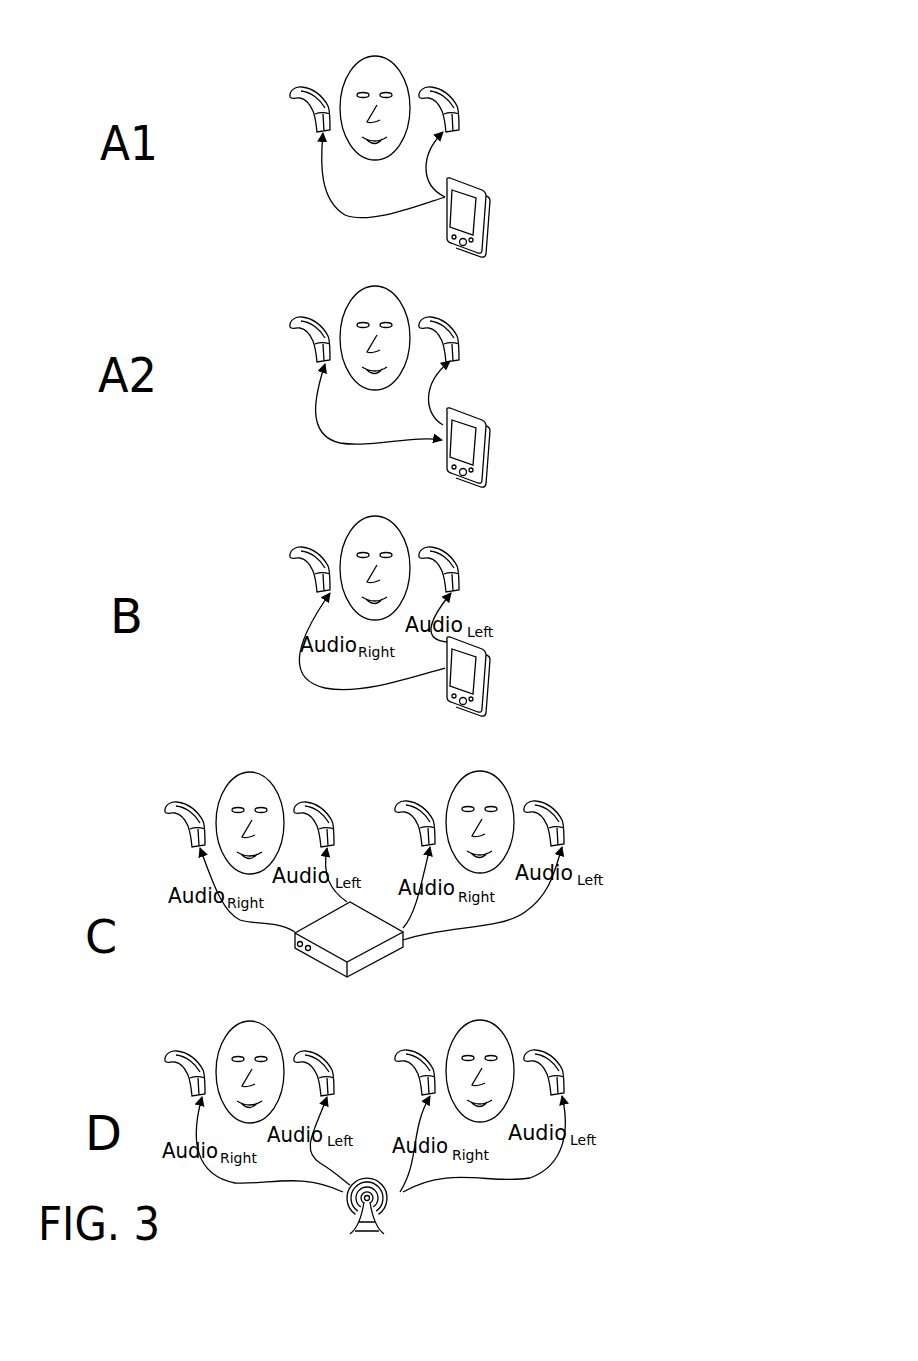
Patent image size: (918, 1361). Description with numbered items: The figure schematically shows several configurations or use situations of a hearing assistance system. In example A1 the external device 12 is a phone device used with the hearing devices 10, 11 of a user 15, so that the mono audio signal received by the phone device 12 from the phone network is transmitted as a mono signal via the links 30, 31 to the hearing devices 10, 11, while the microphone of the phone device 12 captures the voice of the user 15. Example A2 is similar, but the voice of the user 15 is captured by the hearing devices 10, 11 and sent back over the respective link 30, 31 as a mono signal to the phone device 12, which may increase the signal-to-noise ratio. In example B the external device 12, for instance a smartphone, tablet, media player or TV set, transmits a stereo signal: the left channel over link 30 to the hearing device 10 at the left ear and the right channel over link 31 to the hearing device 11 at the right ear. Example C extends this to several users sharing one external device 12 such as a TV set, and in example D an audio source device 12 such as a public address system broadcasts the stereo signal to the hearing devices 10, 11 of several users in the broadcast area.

The hearing device 10 is at (459, 113).
The hearing device 11 is at (308, 104).
The external device 12 is at (487, 210).
The user 15 is at (387, 70).
The link 30 is at (433, 143).
The link 31 is at (341, 206).